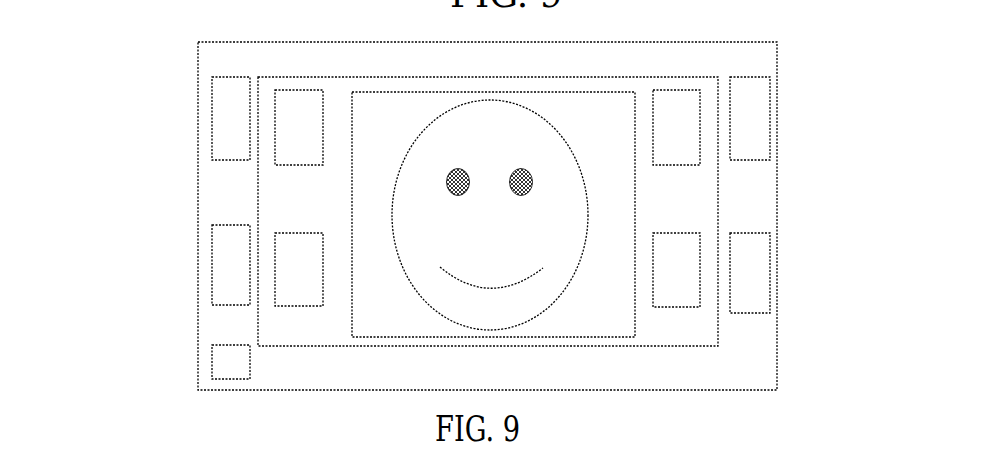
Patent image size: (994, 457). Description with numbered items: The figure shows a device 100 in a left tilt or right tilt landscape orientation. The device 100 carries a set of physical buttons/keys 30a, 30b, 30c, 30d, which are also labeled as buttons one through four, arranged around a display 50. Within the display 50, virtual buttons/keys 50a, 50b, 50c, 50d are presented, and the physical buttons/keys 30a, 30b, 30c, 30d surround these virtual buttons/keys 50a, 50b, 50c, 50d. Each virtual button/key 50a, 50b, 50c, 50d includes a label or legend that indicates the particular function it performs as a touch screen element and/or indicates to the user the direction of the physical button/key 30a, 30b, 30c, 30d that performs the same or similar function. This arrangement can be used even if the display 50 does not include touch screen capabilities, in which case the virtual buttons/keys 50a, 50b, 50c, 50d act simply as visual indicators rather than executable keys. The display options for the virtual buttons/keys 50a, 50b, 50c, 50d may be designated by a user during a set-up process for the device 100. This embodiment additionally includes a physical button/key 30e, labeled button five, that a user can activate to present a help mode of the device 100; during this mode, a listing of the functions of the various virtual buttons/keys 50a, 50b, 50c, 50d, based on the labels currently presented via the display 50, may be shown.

The device 100 is at (762, 42).
The display 50 is at (720, 195).
The virtual button/key 50a is at (295, 90).
The virtual button/key 50b is at (668, 90).
The virtual button/key 50c is at (290, 233).
The virtual button/key 50d is at (665, 233).
The physical button/key 30a is at (213, 266).
The physical button/key 30b is at (213, 113).
The physical button/key 30c is at (769, 268).
The physical button/key 30d is at (769, 110).
The physical button/key 30e is at (213, 370).